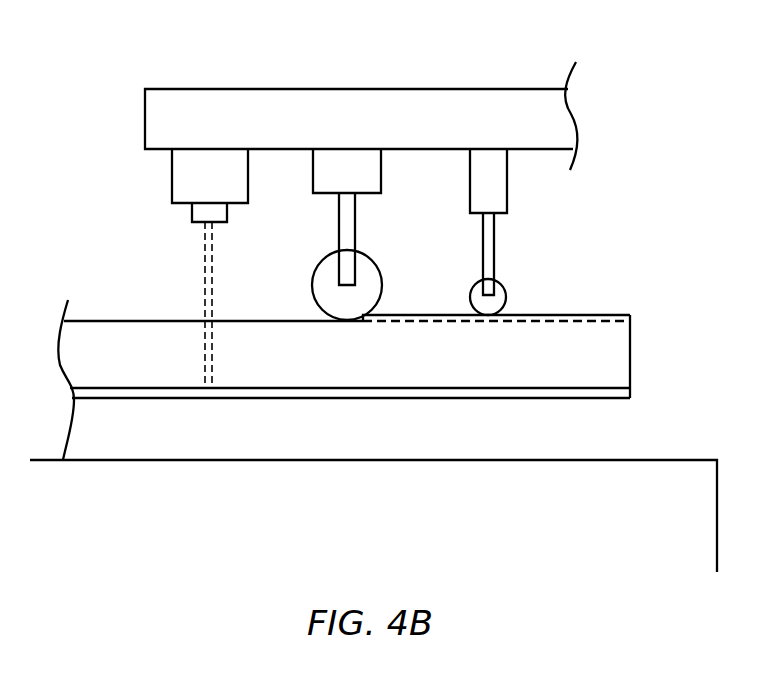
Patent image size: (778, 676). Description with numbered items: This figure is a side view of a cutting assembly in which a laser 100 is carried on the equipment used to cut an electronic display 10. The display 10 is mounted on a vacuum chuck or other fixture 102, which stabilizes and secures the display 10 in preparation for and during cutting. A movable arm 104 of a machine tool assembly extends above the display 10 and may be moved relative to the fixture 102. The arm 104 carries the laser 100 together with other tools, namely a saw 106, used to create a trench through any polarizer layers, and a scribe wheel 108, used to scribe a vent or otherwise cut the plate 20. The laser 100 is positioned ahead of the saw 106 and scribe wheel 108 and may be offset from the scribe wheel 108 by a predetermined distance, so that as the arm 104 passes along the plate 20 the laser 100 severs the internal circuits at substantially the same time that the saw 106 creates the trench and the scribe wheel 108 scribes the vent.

The liquid crystal display 10 is at (397, 360).
The plate 20 is at (496, 290).
The laser 100 is at (166, 181).
The fixture 102 is at (665, 460).
The movable arm 104 is at (399, 89).
The saw 106 is at (312, 280).
The scribe wheel 108 is at (505, 283).